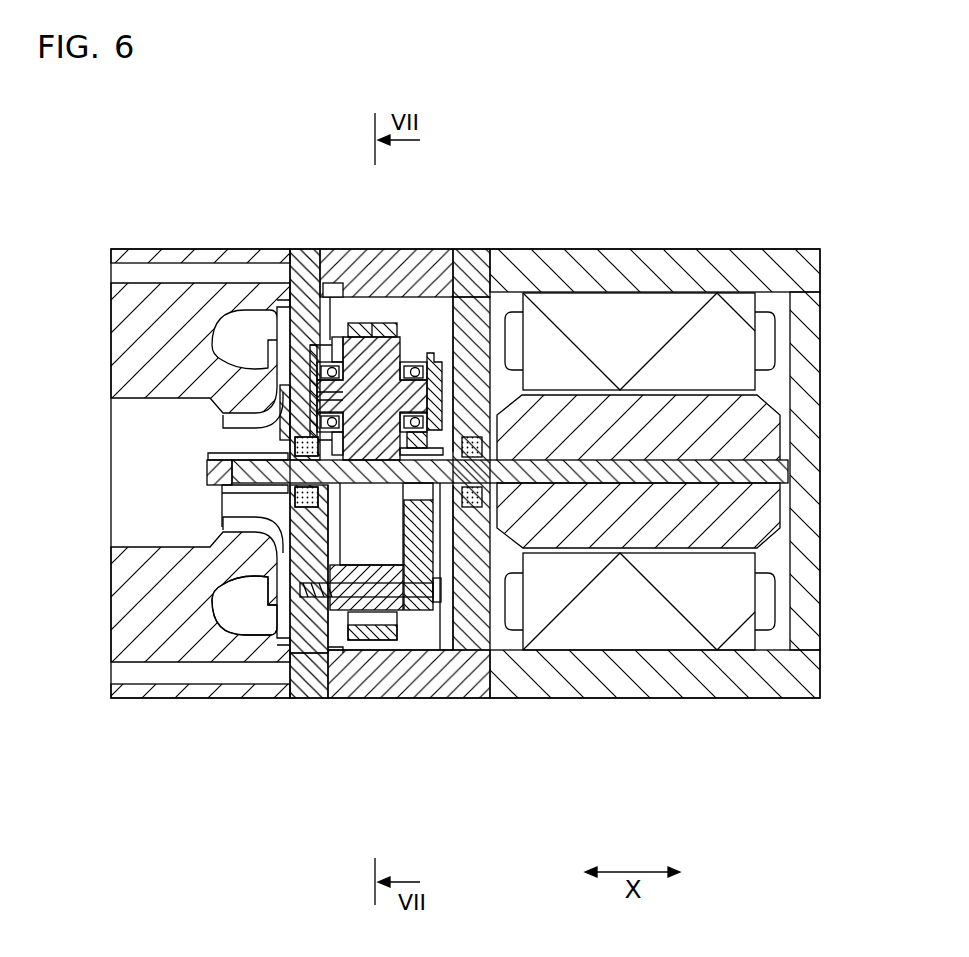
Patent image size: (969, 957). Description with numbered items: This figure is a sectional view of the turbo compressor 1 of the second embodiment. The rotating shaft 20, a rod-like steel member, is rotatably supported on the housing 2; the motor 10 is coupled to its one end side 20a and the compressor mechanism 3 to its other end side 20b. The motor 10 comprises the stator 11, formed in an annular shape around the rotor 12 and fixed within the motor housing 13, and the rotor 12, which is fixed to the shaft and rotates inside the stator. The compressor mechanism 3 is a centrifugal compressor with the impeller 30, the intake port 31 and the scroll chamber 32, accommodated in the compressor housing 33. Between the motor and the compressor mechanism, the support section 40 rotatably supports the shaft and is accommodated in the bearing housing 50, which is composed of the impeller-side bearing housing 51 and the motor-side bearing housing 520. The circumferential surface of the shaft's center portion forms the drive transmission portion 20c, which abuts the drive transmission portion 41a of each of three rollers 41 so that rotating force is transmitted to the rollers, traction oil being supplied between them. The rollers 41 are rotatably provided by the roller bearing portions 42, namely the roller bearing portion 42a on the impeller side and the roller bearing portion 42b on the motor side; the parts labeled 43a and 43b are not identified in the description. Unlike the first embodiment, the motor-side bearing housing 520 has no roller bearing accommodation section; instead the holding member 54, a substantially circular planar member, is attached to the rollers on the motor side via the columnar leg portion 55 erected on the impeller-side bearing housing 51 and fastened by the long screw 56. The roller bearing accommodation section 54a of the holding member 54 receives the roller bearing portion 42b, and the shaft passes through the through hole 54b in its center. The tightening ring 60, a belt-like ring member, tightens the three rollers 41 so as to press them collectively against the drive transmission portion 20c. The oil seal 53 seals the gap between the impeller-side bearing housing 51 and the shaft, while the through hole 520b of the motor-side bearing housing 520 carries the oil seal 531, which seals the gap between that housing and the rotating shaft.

The turbo compressor 1 is at (722, 168).
The housing 2 is at (500, 812).
The compressor mechanism 3 is at (82, 785).
The motor 10 is at (750, 785).
The stator 11 is at (687, 623).
The rotor 12 is at (617, 538).
The motor housing 13 is at (497, 690).
The rotating shaft 20 is at (434, 581).
The one end side 20a is at (790, 480).
The other end side 20b is at (280, 500).
The drive transmission portion 20c is at (318, 397).
The impeller 30 is at (245, 512).
The intake port 31 is at (125, 530).
The scroll chamber 32 is at (233, 610).
The compressor housing 33 is at (270, 700).
The support section 40 is at (415, 312).
The rollers 41 is at (386, 337).
The drive transmission portion 41a is at (290, 478).
The bearing 42 is at (180, 185).
The roller bearing portion 42a is at (312, 350).
The roller bearing portion 42b is at (336, 338).
The first bearing holder 43a is at (405, 365).
The second bearing holder 43b is at (432, 420).
The bearing housing 50 is at (335, 768).
The impeller-side bearing housing 51 is at (302, 692).
The motor-side bearing housing 520 is at (420, 690).
The through hole 520b is at (523, 458).
The oil seal 531 is at (485, 445).
The oil seal 53 is at (265, 508).
The holding member 54 is at (512, 469).
The roller bearing accommodation section 54a is at (420, 352).
The through hole 54b is at (472, 440).
The leg portion 55 is at (332, 592).
The long screw 56 is at (288, 650).
The tightening ring 60 is at (366, 325).